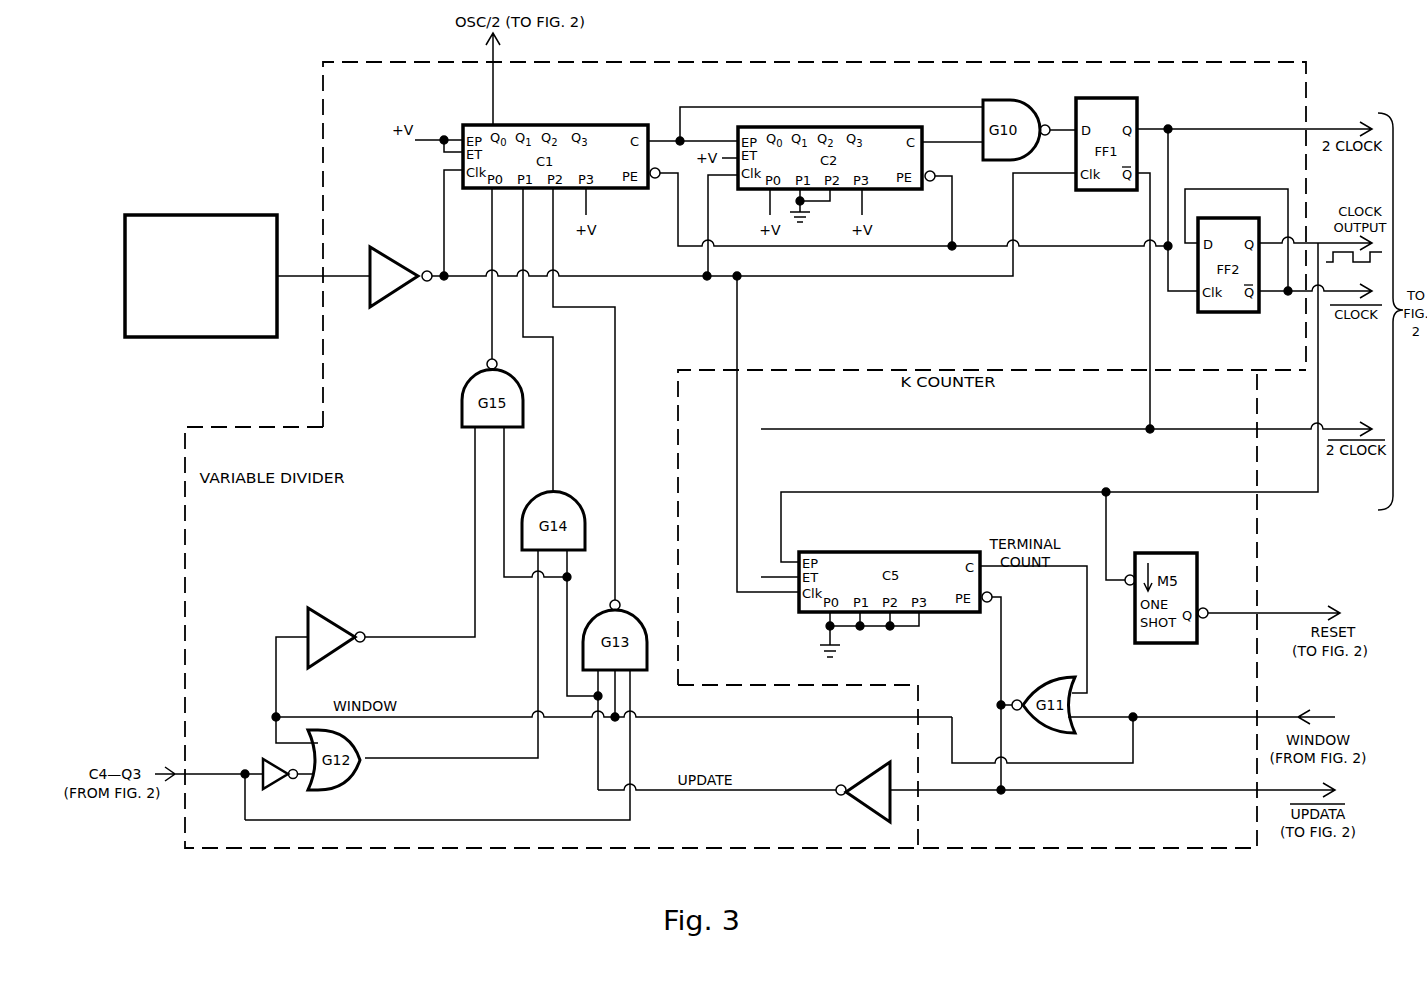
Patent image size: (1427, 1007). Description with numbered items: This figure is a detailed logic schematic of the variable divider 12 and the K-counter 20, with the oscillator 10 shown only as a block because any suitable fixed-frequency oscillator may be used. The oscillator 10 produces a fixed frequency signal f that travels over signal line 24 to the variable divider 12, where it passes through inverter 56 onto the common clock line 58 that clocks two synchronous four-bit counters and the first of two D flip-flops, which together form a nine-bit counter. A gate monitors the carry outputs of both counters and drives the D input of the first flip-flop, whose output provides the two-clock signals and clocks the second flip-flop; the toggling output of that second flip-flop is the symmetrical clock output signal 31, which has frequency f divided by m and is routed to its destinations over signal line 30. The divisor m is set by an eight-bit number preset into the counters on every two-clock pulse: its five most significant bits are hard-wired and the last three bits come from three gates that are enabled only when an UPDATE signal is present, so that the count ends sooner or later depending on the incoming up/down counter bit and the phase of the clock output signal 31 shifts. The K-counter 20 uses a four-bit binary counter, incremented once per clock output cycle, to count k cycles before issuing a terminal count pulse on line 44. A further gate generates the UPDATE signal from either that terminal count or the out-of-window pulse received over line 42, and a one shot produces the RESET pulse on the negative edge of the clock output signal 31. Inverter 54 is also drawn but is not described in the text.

The oscillator 10 is at (178, 215).
The variable divider 12 is at (730, 62).
The K-counter 20 is at (1293, 575).
The signal line 24 is at (280, 278).
The signal line 30 is at (1318, 412).
The clock output signal 31 is at (1358, 268).
The line 42 is at (1280, 716).
The line 44 is at (1087, 645).
The inverter 54 is at (882, 801).
The inverter 56 is at (397, 286).
The common clock line 58 is at (832, 278).